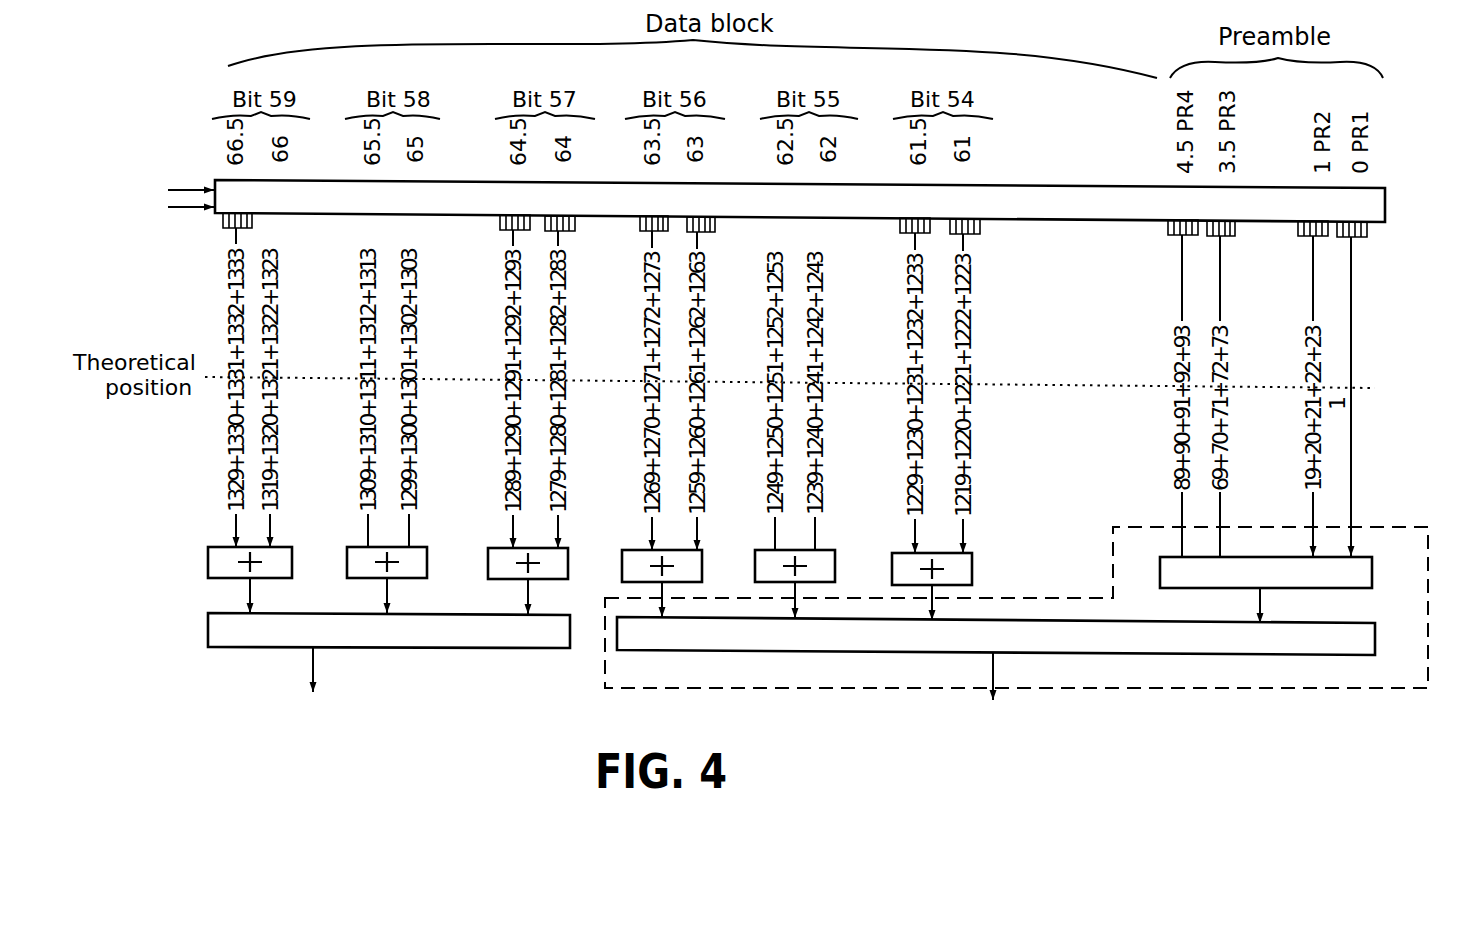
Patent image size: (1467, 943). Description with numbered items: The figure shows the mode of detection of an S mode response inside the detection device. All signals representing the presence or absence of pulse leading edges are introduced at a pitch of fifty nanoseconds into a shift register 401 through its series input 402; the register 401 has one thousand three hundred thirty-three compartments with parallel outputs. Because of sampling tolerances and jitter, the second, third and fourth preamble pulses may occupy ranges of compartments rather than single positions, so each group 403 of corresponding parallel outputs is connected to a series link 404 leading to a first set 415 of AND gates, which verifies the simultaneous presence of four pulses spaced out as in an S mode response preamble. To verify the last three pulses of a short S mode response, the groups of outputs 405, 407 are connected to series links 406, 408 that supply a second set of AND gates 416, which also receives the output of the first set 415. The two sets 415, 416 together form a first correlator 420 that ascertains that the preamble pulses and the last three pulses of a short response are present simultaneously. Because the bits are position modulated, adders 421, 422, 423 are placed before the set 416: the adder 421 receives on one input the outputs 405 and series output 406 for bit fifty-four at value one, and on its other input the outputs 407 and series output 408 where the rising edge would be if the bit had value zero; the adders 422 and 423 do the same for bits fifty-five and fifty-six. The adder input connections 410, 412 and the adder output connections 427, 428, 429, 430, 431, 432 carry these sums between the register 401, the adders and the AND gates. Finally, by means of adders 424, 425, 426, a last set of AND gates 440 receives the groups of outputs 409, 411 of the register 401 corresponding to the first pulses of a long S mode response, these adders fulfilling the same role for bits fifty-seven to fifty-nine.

The shift register 401 is at (1372, 211).
The series input 402 is at (232, 196).
The group of corresponding parallel outputs 403 is at (1170, 240).
The series link 404 is at (1310, 296).
The group of outputs 405 is at (710, 233).
The series link 406 is at (700, 530).
The group of outputs 407 is at (640, 240).
The series link 408 is at (645, 526).
The group of outputs 409 is at (641, 232).
The adder input connection 410 is at (560, 526).
The group of outputs 411 is at (222, 228).
The adder input connections 412 is at (230, 525).
The first set of AND gates 415 is at (1360, 572).
The second set of AND gates 416 is at (1362, 648).
The first correlator 420 is at (1318, 692).
The adder 421 is at (970, 582).
The adder 422 is at (830, 572).
The adder 423 is at (698, 572).
The adder 424 is at (488, 570).
The adder 425 is at (349, 548).
The adder 426 is at (208, 566).
The adder output connection 427 is at (930, 596).
The adder output connection 428 is at (792, 596).
The adder output connection 429 is at (606, 598).
The adder output connection 430 is at (525, 596).
The adder output connection 431 is at (384, 596).
The adder output connection 432 is at (248, 595).
The last set of AND gates 440 is at (516, 645).